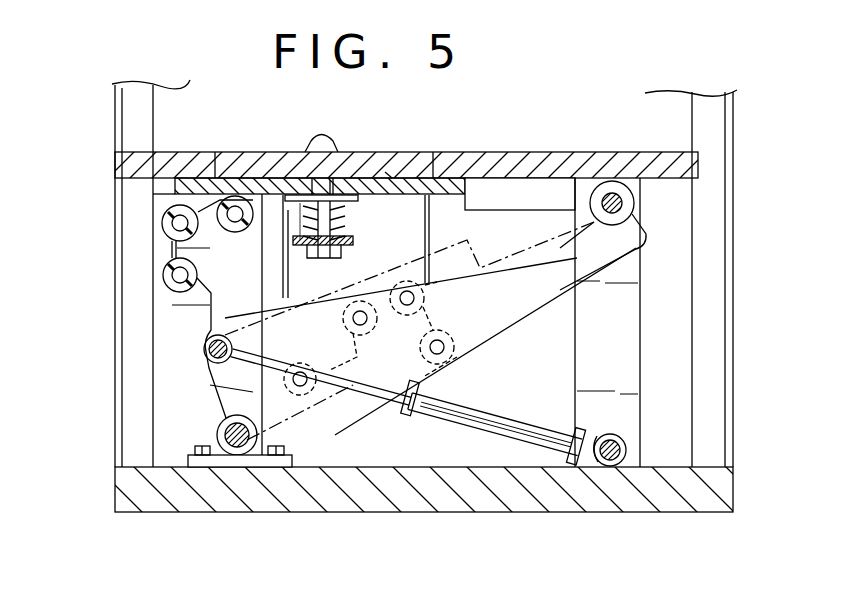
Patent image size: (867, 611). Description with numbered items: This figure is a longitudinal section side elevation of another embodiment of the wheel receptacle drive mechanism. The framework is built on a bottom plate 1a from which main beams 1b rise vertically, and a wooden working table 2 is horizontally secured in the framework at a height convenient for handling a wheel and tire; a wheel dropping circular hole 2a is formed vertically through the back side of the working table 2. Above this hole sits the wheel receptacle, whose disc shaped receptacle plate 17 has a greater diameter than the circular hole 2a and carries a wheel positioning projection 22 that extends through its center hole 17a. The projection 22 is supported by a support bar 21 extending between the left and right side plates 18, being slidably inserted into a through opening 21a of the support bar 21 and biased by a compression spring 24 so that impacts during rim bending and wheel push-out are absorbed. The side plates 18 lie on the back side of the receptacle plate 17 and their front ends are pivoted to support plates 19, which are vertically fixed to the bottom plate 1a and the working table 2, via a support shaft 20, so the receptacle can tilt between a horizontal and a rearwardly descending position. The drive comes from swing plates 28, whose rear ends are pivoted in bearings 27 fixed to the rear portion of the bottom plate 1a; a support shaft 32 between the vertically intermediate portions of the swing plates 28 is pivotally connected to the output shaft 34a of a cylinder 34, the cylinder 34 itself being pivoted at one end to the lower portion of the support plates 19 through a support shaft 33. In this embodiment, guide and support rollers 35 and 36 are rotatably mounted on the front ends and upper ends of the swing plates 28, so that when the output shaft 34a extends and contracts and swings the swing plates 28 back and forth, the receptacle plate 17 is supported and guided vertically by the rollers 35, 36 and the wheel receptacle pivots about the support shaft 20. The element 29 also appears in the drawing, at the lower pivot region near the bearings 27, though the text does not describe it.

The bottom plate 1a is at (142, 500).
The main beams 1b is at (122, 118).
The working table 2 is at (592, 151).
The wheel dropping circular hole 2a is at (430, 168).
The receptacle plate 17 is at (176, 193).
The center hole 17a is at (300, 178).
The side plates 18 is at (504, 217).
The support plates 19 is at (641, 329).
The support shaft 20 is at (615, 206).
The support bar 21 is at (295, 240).
The through opening 21a is at (346, 238).
The wheel positioning projection 22 is at (322, 150).
The compression spring 24 is at (388, 172).
The bearings 27 is at (215, 456).
The swing plates 28 is at (215, 311).
The roller 29 is at (243, 456).
The support shaft 32 is at (205, 352).
The support shaft 33 is at (612, 466).
The cylinder 34 is at (533, 432).
The output shaft 34a is at (401, 408).
The guide and support rollers 35 is at (162, 276).
The guide and support roller 36 is at (233, 196).